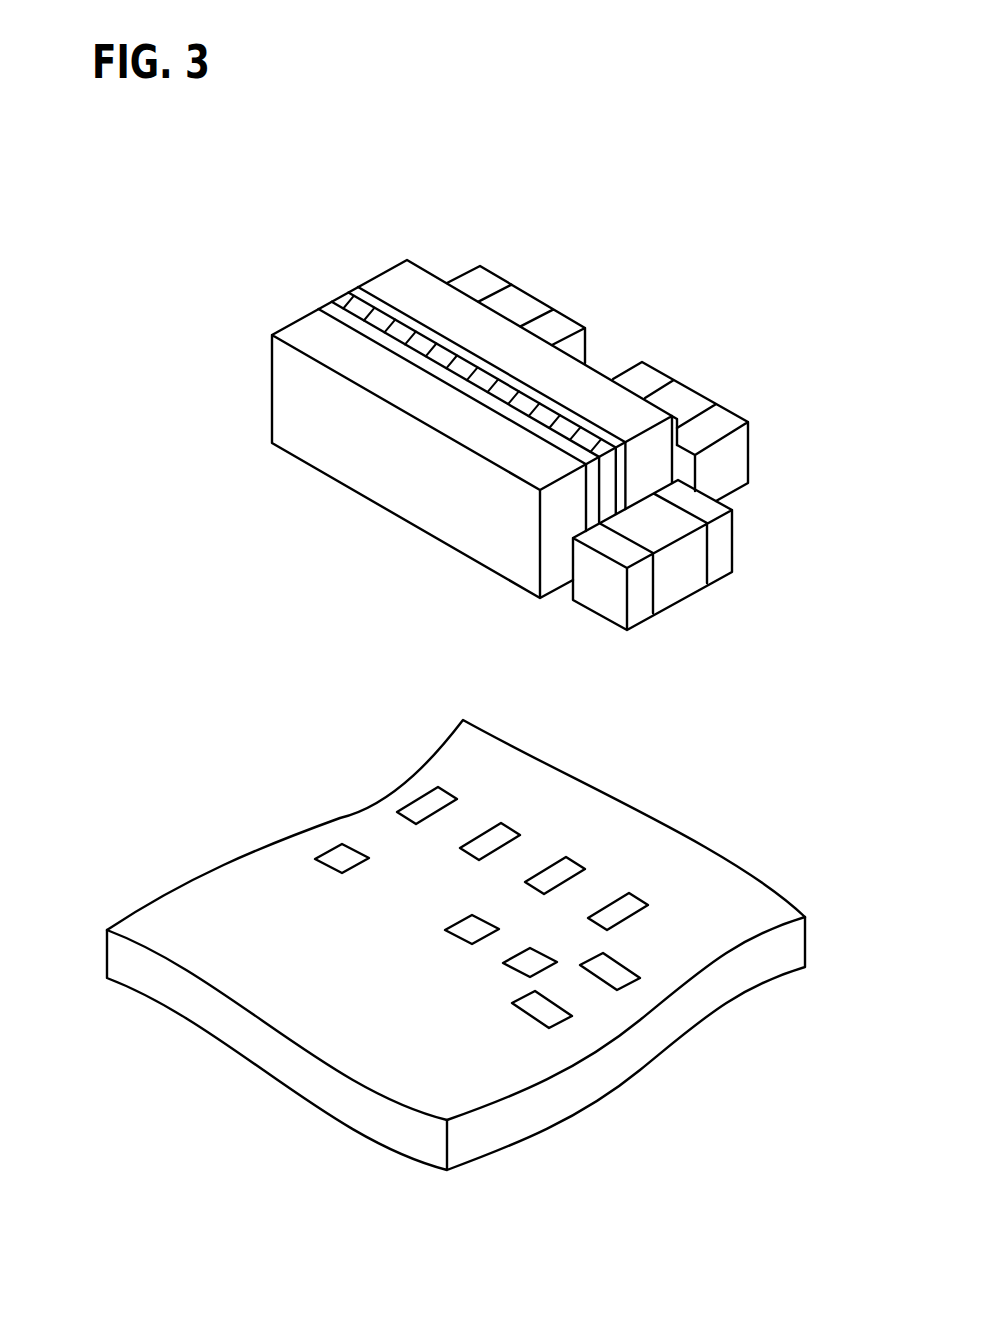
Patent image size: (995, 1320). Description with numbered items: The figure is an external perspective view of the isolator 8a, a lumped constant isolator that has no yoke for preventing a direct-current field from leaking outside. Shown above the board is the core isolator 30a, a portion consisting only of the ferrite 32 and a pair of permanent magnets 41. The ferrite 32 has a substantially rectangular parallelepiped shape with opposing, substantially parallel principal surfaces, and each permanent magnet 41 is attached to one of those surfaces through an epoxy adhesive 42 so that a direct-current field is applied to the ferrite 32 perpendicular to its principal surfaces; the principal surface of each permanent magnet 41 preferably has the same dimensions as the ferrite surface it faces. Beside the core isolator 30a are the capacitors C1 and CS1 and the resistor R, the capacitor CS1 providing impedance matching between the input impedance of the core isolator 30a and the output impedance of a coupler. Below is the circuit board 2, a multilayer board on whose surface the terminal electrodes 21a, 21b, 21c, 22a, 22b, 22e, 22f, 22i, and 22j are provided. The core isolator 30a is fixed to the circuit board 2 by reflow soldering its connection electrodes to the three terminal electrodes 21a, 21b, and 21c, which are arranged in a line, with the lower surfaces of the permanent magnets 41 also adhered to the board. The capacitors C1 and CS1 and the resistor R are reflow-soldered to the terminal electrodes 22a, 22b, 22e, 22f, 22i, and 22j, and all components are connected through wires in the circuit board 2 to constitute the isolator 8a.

The isolator 8a is at (77, 322).
The core isolator 30a is at (306, 303).
The ferrite 32 is at (355, 310).
The permanent magnet 41 is at (310, 330).
The epoxy adhesive 42 is at (376, 342).
The capacitor CS1 is at (523, 303).
The resistor R is at (675, 398).
The capacitor C1 is at (681, 580).
The circuit board 2 is at (562, 776).
The terminal electrode 21a is at (510, 967).
The terminal electrode 21b is at (458, 920).
The terminal electrode 21c is at (336, 846).
The terminal electrode 22a is at (568, 1022).
The terminal electrode 22b is at (640, 980).
The terminal electrode 22e is at (417, 800).
The terminal electrode 22f is at (488, 830).
The terminal electrode 22i is at (577, 862).
The terminal electrode 22j is at (645, 902).